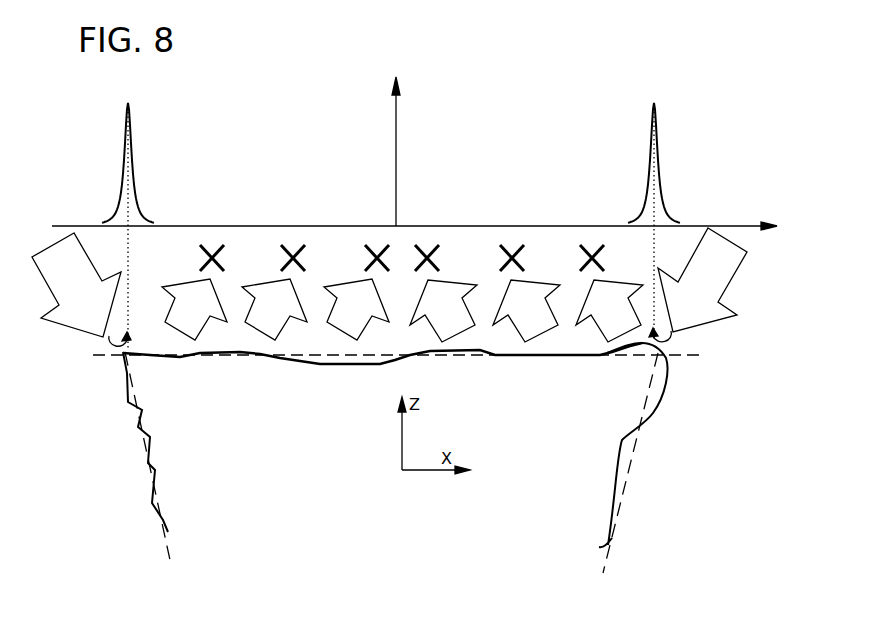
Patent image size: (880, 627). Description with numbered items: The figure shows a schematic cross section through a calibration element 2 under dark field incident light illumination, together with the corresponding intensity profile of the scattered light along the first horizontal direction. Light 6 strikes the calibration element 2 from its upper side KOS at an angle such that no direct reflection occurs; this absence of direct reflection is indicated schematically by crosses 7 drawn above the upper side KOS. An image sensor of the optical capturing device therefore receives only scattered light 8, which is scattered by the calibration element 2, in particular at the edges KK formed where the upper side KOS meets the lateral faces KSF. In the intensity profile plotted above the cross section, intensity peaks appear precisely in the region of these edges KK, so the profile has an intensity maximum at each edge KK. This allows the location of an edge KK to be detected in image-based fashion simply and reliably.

The calibration element 2 is at (389, 465).
The light 6 is at (43, 283).
The crosses 7 is at (204, 261).
The scattered light 8 is at (127, 335).
The edges KK is at (110, 348).
The upper side KOS is at (225, 358).
The lateral faces KSF is at (153, 473).